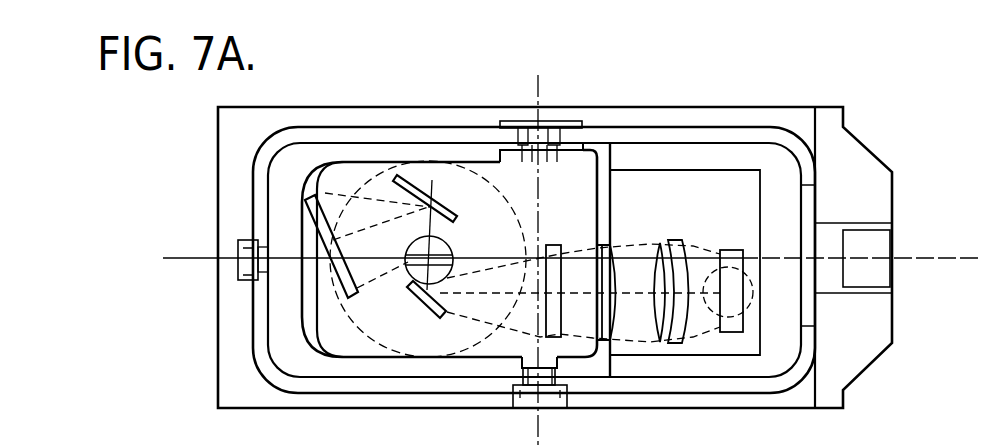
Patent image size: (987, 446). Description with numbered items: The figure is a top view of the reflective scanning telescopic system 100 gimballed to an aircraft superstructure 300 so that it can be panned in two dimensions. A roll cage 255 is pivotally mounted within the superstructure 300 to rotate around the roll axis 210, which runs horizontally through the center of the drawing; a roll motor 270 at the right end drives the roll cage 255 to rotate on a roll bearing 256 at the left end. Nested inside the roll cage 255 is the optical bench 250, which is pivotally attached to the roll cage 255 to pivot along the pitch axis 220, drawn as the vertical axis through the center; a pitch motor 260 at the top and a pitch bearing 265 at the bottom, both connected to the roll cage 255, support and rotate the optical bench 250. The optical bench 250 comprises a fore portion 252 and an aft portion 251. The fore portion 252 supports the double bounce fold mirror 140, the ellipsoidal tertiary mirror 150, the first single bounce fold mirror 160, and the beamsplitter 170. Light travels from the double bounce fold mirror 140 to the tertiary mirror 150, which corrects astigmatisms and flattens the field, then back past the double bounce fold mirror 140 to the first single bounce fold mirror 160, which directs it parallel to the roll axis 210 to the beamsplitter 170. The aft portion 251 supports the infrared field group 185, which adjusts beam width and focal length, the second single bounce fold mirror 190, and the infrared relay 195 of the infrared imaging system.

The reflective scanning telescopic system 100 is at (632, 68).
The double bounce fold mirror 140 is at (432, 180).
The ellipsoidal tertiary mirror 150 is at (320, 200).
The first single bounce fold mirror 160 is at (443, 316).
The beamsplitter 170 is at (563, 337).
The infrared field group 185 is at (696, 242).
The second single bounce fold mirror 190 is at (722, 245).
The infrared relay 195 is at (753, 283).
The roll axis 210 is at (900, 258).
The pitch axis 220 is at (552, 110).
The optical bench 250 is at (580, 180).
The aft portion 251 is at (763, 182).
The fore portion 252 is at (307, 337).
The roll cage 255 is at (709, 380).
The roll bearing 256 is at (238, 277).
The pitch motor 260 is at (523, 121).
The pitch bearing 265 is at (545, 402).
The roll motor 270 is at (893, 246).
The aircraft superstructure 300 is at (230, 157).